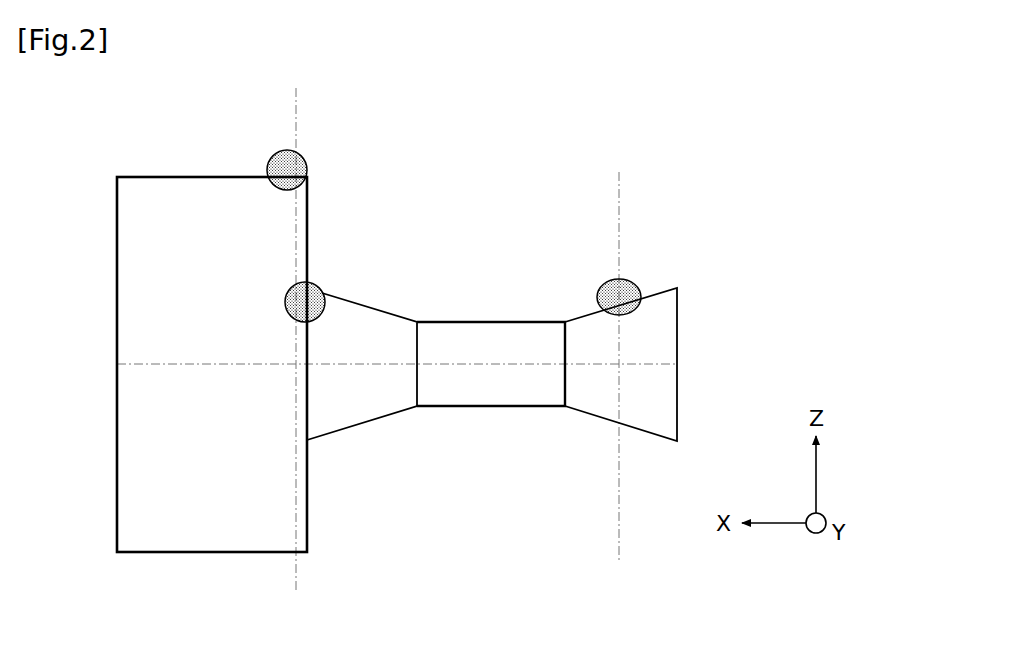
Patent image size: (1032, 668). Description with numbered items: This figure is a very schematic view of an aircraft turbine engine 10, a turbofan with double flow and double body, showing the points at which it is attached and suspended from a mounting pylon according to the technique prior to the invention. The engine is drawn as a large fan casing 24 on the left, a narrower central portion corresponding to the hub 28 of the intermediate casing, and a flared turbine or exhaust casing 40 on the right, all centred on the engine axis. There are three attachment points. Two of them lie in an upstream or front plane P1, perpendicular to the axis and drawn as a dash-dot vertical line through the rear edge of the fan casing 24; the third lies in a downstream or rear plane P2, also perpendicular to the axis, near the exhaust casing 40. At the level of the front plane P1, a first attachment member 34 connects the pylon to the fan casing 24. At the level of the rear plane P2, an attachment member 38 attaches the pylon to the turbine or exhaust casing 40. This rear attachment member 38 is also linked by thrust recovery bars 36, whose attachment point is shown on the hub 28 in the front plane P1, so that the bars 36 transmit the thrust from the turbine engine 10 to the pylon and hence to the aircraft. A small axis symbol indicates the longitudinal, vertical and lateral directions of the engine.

The turbine engine 10 is at (527, 118).
The fan casing 24 is at (160, 186).
The hub of the intermediate casing 28 is at (310, 443).
The first attachment member 34 is at (287, 149).
The thrust recovery bars 36 is at (316, 284).
The attachment member 38 is at (623, 283).
The turbine or exhaust casing 40 is at (634, 400).
The front plane P1 is at (295, 98).
The rear plane P2 is at (620, 185).